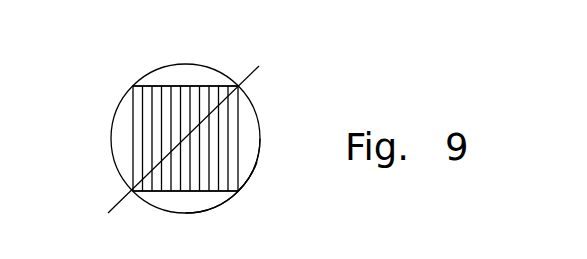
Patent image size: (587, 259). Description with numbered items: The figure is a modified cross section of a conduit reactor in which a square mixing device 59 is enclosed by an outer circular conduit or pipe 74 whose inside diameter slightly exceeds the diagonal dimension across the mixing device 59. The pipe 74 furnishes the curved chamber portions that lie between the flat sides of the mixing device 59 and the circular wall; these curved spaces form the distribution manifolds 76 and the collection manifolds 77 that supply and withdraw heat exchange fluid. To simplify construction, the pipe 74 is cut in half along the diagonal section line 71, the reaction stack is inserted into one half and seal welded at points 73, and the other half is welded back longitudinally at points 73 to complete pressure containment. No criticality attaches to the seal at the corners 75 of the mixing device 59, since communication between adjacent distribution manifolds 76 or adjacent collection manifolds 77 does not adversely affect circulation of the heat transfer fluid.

The mixing device 59 is at (213, 128).
The section line 71 is at (259, 68).
The points 73 is at (238, 86).
The pipe 74 is at (252, 173).
The corners 75 is at (133, 86).
The distribution manifolds 76 is at (174, 73).
The collection manifolds 77 is at (252, 141).